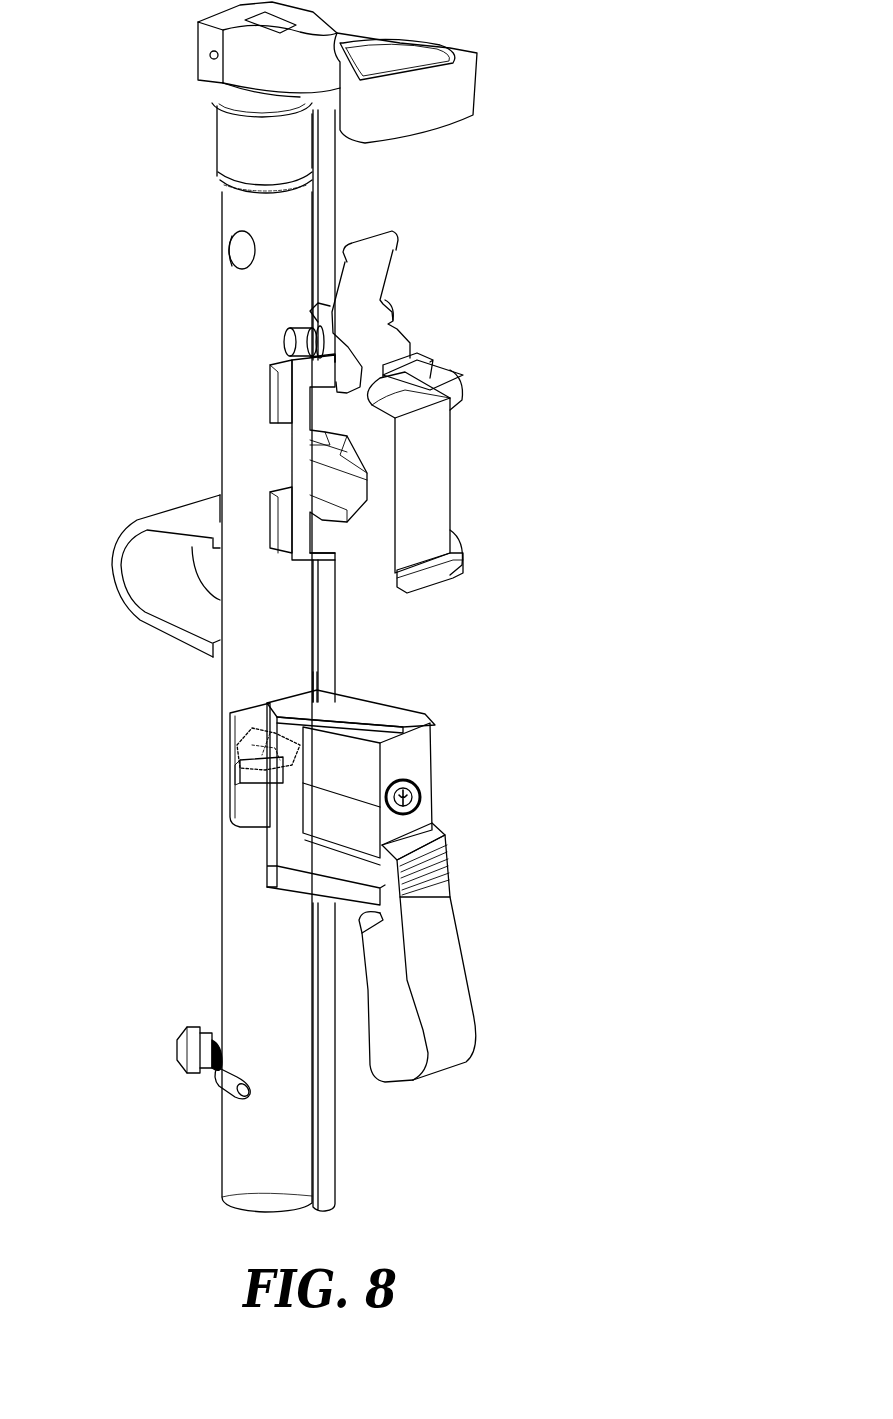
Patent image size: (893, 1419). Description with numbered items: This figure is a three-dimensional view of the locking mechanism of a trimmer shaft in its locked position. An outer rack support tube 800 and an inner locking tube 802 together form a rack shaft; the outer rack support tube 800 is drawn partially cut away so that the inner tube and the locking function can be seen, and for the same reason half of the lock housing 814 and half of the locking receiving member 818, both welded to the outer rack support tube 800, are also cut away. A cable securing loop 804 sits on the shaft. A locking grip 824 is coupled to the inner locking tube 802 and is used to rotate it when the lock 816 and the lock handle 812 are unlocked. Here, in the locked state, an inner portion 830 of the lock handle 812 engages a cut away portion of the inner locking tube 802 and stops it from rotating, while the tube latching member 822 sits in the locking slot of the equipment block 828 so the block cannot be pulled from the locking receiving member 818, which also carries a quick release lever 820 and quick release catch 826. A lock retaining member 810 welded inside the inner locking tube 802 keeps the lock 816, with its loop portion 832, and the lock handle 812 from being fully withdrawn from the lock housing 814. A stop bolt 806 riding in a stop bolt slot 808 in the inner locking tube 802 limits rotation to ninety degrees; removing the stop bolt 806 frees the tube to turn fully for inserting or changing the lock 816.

The outer rack support tube 800 is at (338, 184).
The inner locking tube 802 is at (238, 291).
The cable securing loop 804 is at (110, 562).
The stop bolt 806 is at (191, 1039).
The stop bolt slot 808 is at (238, 1095).
The lock retaining member 810 is at (260, 773).
The lock handle 812 is at (448, 984).
The lock housing 814 is at (390, 708).
The lock 816 is at (411, 757).
The locking receiving member 818 is at (428, 595).
The quick release lever 820 is at (373, 276).
The tube latching member 822 is at (282, 458).
The locking grip 824 is at (477, 80).
The quick release catch 826 is at (397, 431).
The equipment block 828 is at (437, 483).
The inner portion of the lock handle 830 is at (267, 811).
The loop portion of the lock 832 is at (273, 743).